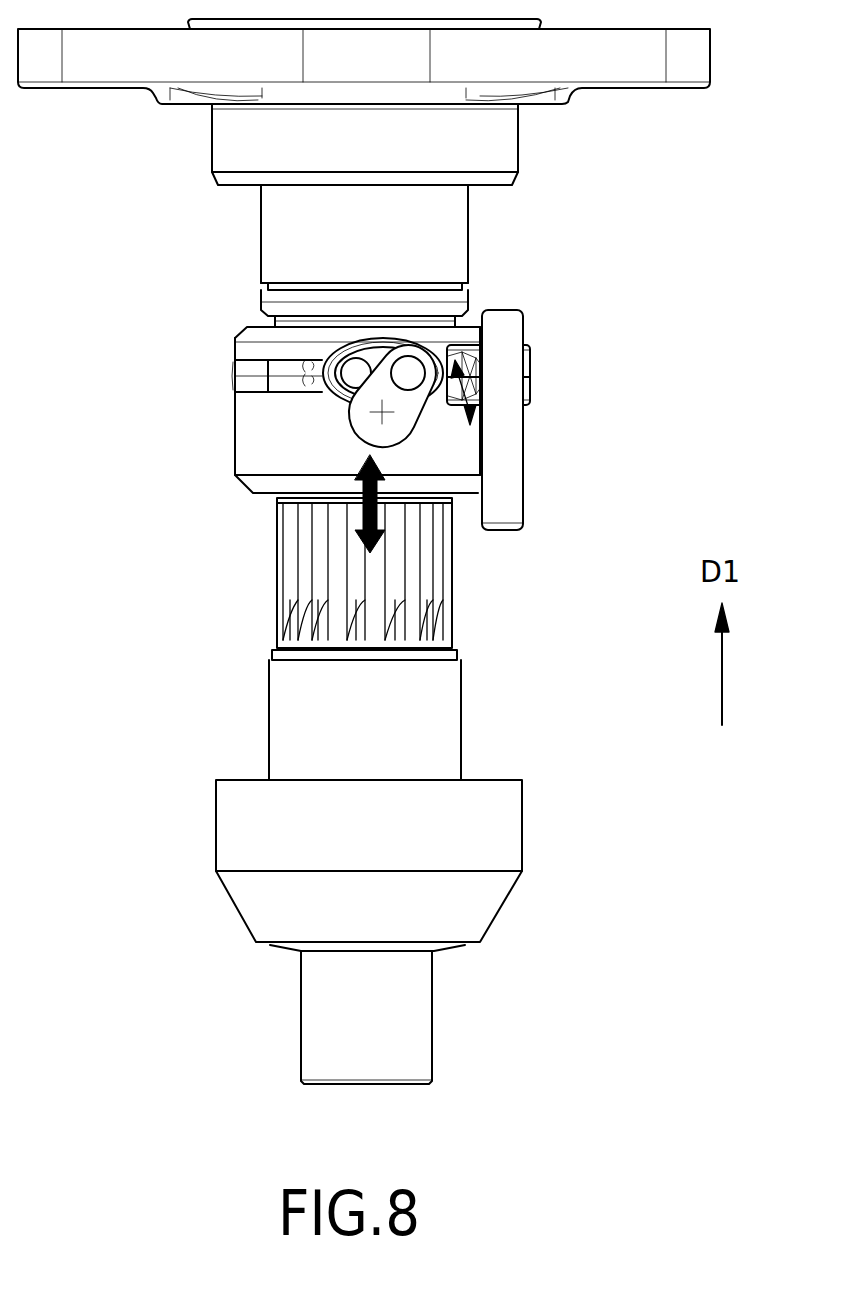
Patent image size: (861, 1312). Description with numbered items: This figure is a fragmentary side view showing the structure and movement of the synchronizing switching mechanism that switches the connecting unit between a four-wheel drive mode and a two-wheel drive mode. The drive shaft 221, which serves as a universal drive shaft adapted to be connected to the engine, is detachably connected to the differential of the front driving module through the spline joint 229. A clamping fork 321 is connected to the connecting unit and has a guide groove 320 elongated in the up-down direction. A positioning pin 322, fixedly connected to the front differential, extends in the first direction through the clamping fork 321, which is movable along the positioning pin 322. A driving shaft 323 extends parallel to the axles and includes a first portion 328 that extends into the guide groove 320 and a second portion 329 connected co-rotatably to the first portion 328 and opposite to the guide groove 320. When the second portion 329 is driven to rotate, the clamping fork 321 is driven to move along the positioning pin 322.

The drive shaft 221 is at (320, 1023).
The spline joint 229 is at (428, 593).
The guide groove 320 is at (350, 343).
The clamping fork 321 is at (505, 362).
The positioning pin 322 is at (513, 504).
The driving shaft 323 is at (303, 400).
The first portion 328 is at (408, 373).
The second portion 329 is at (397, 427).